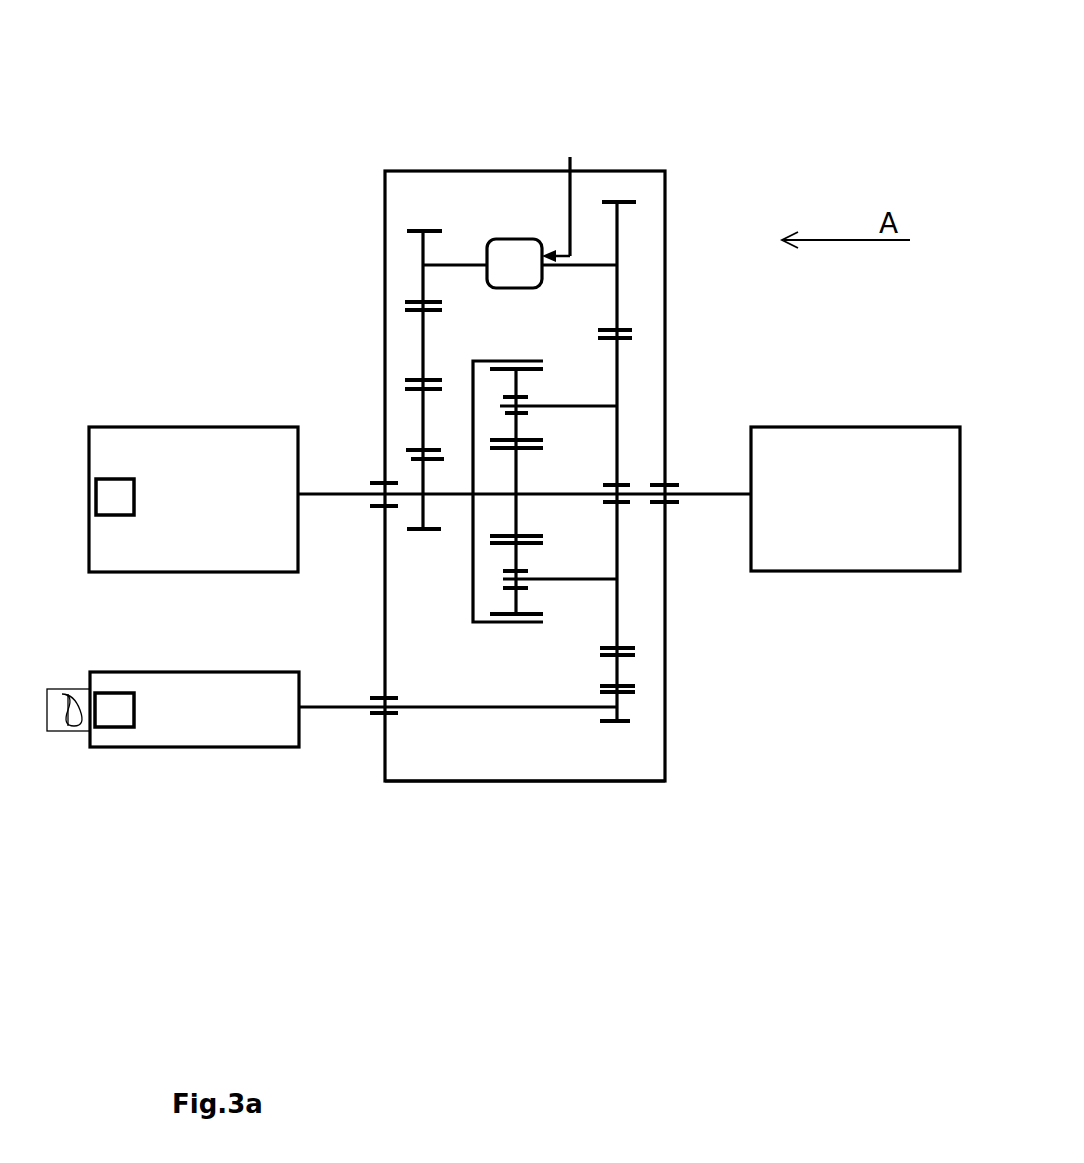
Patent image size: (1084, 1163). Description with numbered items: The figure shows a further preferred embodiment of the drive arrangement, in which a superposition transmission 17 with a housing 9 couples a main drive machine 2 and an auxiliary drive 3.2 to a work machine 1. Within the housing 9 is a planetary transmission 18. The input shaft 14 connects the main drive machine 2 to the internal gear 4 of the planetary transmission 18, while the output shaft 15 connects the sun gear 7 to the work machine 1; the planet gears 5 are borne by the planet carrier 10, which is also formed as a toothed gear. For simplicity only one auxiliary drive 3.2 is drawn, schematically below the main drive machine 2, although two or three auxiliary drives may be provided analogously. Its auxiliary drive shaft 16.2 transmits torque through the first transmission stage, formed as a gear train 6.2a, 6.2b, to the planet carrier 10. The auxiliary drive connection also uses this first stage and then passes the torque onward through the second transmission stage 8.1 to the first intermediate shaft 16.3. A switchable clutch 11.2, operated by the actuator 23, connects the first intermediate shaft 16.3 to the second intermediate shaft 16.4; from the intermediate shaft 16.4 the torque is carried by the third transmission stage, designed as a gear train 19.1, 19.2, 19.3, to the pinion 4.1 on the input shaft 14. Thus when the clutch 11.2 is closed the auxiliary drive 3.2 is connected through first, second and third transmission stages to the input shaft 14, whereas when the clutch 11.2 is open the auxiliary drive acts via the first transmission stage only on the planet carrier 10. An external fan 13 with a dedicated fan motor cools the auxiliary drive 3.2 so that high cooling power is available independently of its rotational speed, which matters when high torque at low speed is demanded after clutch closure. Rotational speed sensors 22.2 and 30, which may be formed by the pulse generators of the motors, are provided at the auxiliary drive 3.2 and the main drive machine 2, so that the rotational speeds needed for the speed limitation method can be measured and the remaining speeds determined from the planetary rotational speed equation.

The work machine 1 is at (900, 427).
The main drive machine 2 is at (160, 427).
The rotational speed sensor 30 is at (115, 479).
The auxiliary drive 3.2 is at (265, 748).
The rotational speed sensor 22.2 is at (118, 728).
The external fan 13 is at (77, 732).
The input shaft 14 is at (335, 496).
The output shaft 15 is at (715, 497).
The auxiliary drive shaft 16.2 is at (315, 709).
The first intermediate shaft 16.3 is at (580, 263).
The second intermediate shaft 16.4 is at (453, 263).
The gear of third transmission stage gear train 19.1 is at (423, 228).
The gear of third transmission stage gear train 19.2 is at (421, 327).
The gear of third transmission stage gear train 19.3 is at (421, 405).
The pinion 4.1 is at (421, 470).
The internal gear 4 is at (471, 575).
The planet gears 5 is at (517, 383).
The sun gear 7 is at (515, 470).
The planetary transmission 18 is at (482, 658).
The switchable clutch 11.2 is at (512, 237).
The actuator 23 is at (571, 200).
The second transmission stage 8.1 is at (620, 240).
The planet carrier 10 is at (619, 632).
The gear of first transmission stage gear train 6.2b is at (619, 665).
The gear of first transmission stage gear train 6.2a is at (619, 725).
The housing 9 is at (635, 786).
The superposition transmission 17 is at (544, 800).